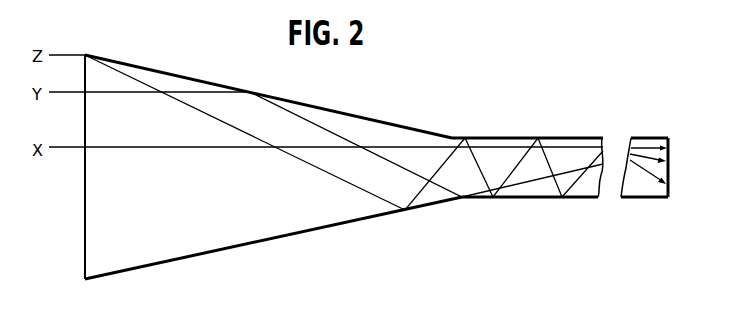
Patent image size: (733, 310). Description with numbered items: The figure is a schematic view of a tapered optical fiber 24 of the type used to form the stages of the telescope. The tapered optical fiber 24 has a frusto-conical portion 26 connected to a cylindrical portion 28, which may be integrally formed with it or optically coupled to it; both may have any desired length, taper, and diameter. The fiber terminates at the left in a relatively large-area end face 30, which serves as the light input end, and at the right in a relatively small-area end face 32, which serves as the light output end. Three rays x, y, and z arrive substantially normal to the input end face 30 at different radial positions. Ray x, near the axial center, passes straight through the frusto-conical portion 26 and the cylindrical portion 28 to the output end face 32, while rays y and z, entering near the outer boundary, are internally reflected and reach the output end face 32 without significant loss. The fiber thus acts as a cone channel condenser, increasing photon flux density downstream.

The tapered optical fiber 24 is at (204, 203).
The frusto-conical portion 26 is at (323, 228).
The cylindrical portion 28 is at (557, 199).
The large-area end face 30 is at (83, 237).
The small-area end face 32 is at (667, 175).